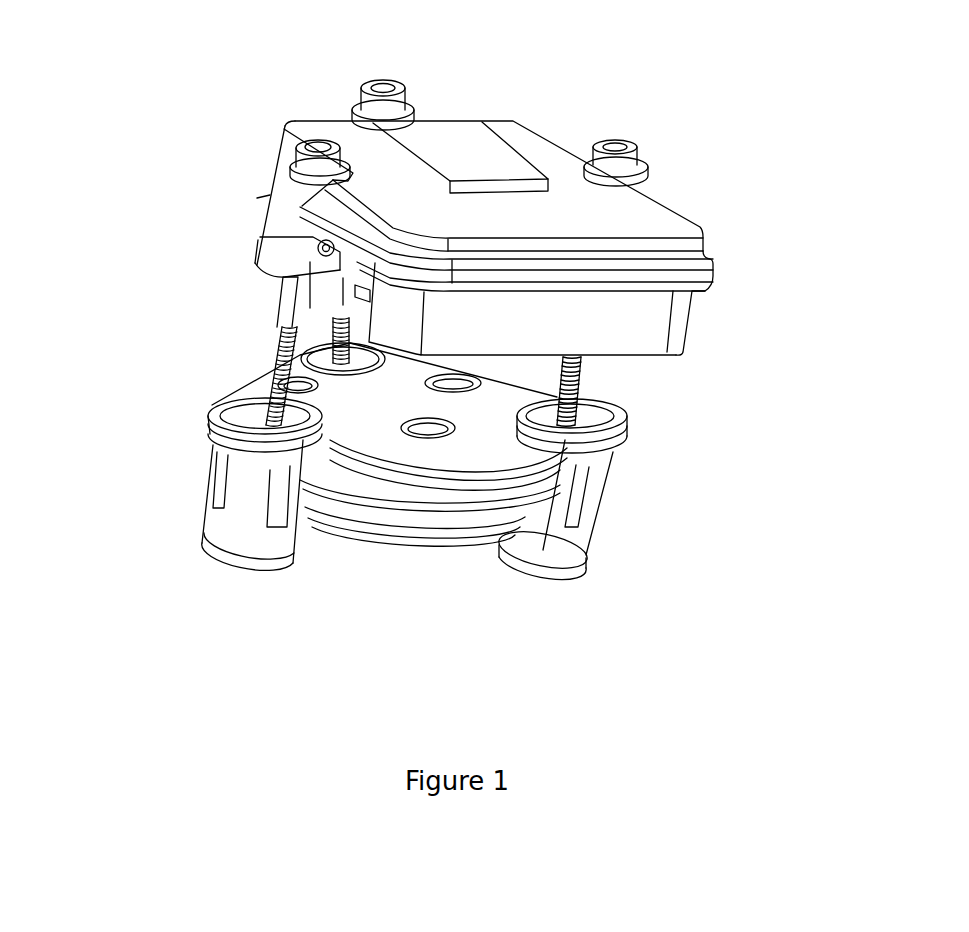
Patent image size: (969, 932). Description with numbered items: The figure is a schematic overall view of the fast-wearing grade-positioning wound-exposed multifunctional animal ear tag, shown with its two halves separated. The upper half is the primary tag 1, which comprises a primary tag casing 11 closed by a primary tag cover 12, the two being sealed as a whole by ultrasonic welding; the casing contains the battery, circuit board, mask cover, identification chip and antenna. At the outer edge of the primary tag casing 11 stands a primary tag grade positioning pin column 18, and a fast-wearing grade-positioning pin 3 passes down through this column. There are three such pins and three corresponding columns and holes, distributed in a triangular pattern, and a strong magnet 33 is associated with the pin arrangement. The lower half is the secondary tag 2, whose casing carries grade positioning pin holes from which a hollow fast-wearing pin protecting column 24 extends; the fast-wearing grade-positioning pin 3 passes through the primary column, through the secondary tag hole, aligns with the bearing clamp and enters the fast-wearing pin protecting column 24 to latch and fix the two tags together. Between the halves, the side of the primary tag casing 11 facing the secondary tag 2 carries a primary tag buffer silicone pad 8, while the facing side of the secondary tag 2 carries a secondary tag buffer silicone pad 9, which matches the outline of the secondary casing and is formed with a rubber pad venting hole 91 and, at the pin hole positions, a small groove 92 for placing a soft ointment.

The primary tag 1 is at (703, 310).
The primary tag casing 11 is at (678, 307).
The primary tag cover 12 is at (535, 132).
The primary tag grade positioning pin column 18 is at (302, 192).
The secondary tag 2 is at (620, 502).
The fast-wearing pin protecting column 24 is at (230, 518).
The fast-wearing grade-positioning pin 3 is at (281, 303).
The strong magnet 33 is at (622, 140).
The primary tag buffer silicone pad 8 is at (256, 258).
The secondary tag buffer silicone pad 9 is at (628, 424).
The rubber pad venting hole 91 is at (429, 433).
The small groove 92 is at (244, 413).